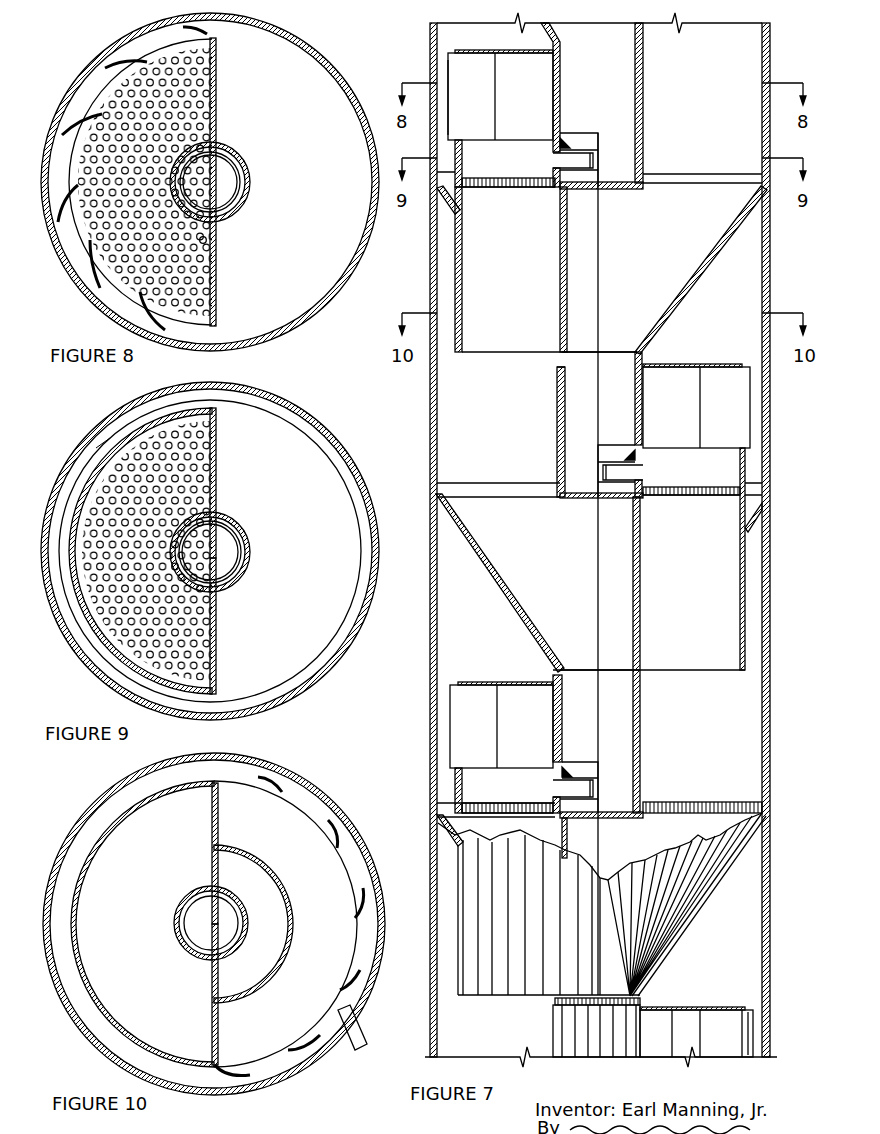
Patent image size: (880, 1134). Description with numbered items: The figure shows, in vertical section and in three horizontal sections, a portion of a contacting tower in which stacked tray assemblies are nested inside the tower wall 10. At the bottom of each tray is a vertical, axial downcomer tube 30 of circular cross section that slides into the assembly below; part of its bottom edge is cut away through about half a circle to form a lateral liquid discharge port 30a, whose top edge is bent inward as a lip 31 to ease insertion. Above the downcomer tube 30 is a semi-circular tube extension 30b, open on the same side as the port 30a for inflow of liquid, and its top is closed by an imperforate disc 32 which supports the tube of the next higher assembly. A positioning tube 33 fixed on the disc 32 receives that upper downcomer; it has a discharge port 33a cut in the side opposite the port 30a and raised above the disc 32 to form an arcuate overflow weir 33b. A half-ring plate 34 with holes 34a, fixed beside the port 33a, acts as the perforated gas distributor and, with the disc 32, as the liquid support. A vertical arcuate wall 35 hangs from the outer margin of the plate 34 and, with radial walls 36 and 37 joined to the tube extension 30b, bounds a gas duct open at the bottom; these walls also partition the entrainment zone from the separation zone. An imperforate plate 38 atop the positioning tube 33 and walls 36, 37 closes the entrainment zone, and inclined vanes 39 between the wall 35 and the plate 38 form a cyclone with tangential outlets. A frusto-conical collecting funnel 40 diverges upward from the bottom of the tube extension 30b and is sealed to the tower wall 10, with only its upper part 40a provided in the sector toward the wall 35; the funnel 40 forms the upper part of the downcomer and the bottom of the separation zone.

In FIG. 8, the tower wall 10 is at (300, 40).
In FIG. 9, the tower wall 10 is at (318, 420).
In FIG. 10, the tower wall 10 is at (280, 770).
In FIG. 7, the tower wall 10 is at (770, 710).
In FIG. 8, the downcomer tube 30 is at (238, 195).
In FIG. 7, the downcomer tube 30 is at (643, 40).
In FIG. 7, the lateral liquid discharge port 30a is at (590, 160).
In FIG. 10, the tube extension 30b is at (186, 914).
In FIG. 7, the tube extension 30b is at (560, 262).
In FIG. 8, the lip 31 is at (195, 164).
In FIG. 10, the lip 31 is at (247, 926).
In FIG. 7, the lip 31 is at (573, 134).
In FIG. 9, the imperforate disc 32 is at (220, 572).
In FIG. 7, the imperforate disc 32 is at (618, 190).
In FIG. 8, the positioning tube 33 is at (251, 176).
In FIG. 9, the positioning tube 33 is at (240, 530).
In FIG. 7, the positioning tube 33 is at (645, 88).
In FIG. 7, the discharge port 33a is at (630, 480).
In FIG. 9, the arcuate overflow weir 33b is at (192, 534).
In FIG. 7, the arcuate overflow weir 33b is at (640, 488).
In FIG. 8, the perforated plate 34 is at (212, 266).
In FIG. 9, the perforated plate 34 is at (206, 622).
In FIG. 7, the perforated plate 34 is at (496, 178).
In FIG. 8, the holes 34a is at (205, 248).
In FIG. 7, the holes 34a is at (486, 190).
In FIG. 9, the vertical arcuate wall 35 is at (140, 436).
In FIG. 10, the vertical arcuate wall 35 is at (118, 823).
In FIG. 7, the vertical arcuate wall 35 is at (465, 323).
In FIG. 9, the radial vertical wall 36 is at (217, 462).
In FIG. 10, the radial vertical wall 36 is at (219, 818).
In FIG. 9, the radial vertical wall 37 is at (217, 646).
In FIG. 10, the radial vertical wall 37 is at (219, 1030).
In FIG. 7, the radial vertical wall 37 is at (600, 836).
In FIG. 10, the imperforate plate 38 is at (317, 986).
In FIG. 7, the imperforate plate 38 is at (495, 52).
In FIG. 8, the vanes 39 is at (210, 36).
In FIG. 10, the vanes 39 is at (352, 1000).
In FIG. 7, the vanes 39 is at (446, 65).
In FIG. 9, the frusto-conical collecting funnel 40 is at (312, 492).
In FIG. 10, the frusto-conical collecting funnel 40 is at (294, 917).
In FIG. 7, the frusto-conical collecting funnel 40 is at (505, 595).
In FIG. 9, the upper part of funnel 40a is at (98, 448).
In FIG. 7, the upper part of funnel 40a is at (755, 512).